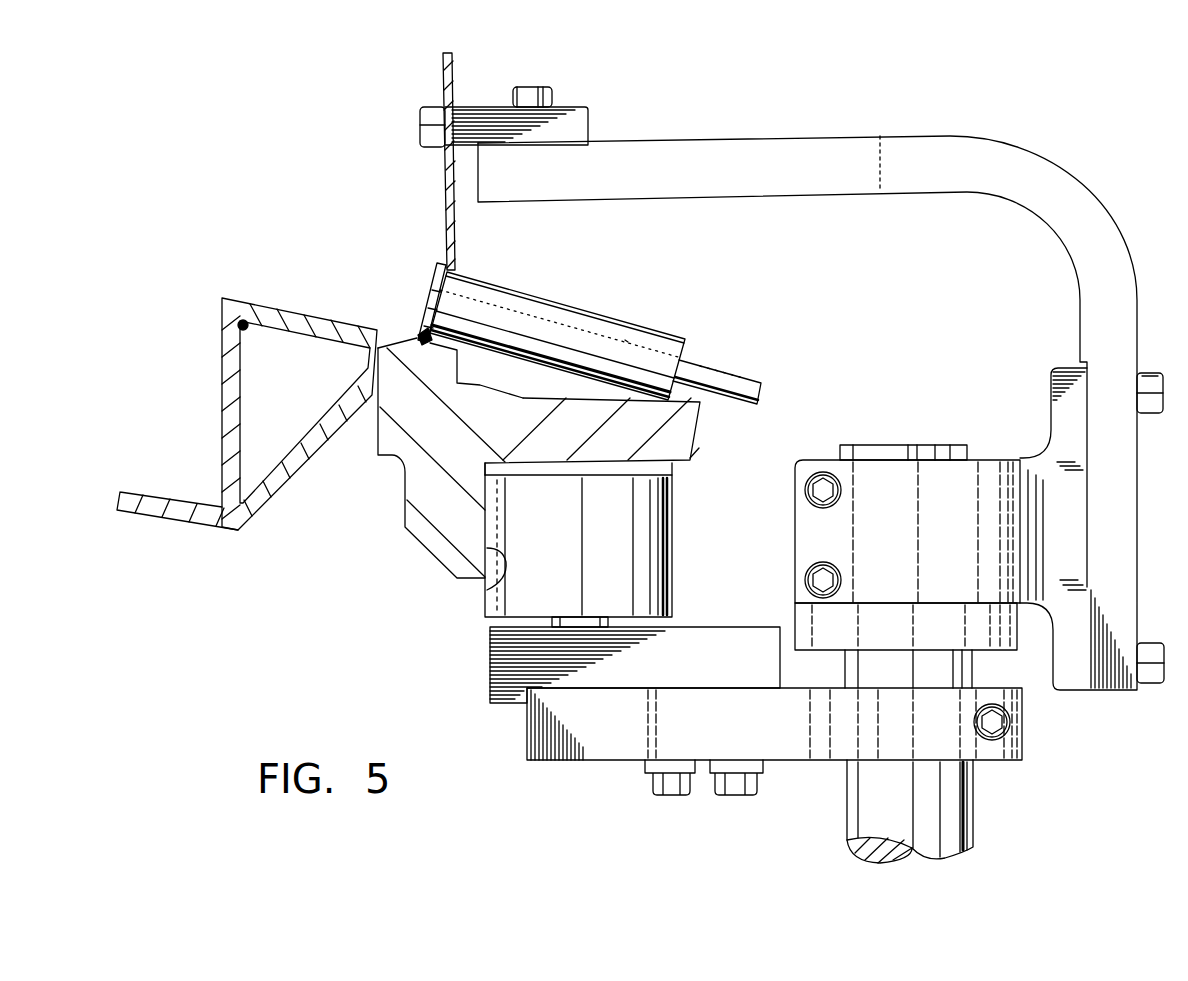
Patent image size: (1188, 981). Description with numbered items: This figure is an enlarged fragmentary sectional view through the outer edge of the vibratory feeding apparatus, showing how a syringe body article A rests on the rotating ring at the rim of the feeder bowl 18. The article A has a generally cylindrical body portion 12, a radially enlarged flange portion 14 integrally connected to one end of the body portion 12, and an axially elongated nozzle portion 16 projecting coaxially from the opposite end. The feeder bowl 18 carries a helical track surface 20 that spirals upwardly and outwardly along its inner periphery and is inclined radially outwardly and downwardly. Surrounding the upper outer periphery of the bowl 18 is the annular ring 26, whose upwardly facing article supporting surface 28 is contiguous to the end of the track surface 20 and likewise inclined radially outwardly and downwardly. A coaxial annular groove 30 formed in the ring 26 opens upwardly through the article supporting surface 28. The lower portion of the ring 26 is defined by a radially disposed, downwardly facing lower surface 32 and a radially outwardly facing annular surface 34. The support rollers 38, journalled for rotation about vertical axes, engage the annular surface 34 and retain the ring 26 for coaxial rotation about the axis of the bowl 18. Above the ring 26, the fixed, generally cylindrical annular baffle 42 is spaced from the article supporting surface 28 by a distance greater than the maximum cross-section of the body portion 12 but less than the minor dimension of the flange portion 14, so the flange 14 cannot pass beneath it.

The body portion 12 is at (660, 350).
The flange portion 14 is at (430, 288).
The nozzle portion 16 is at (730, 383).
The feeder bowl 18 is at (215, 293).
The helical track surface 20 is at (180, 497).
The annular ring 26 is at (688, 438).
The article supporting surface 28 is at (418, 336).
The annular groove 30 is at (485, 386).
The lower surface 32 is at (655, 478).
The annular surface 34 is at (487, 590).
The support rollers 38 is at (650, 575).
The annular baffle 42 is at (452, 80).
The article A is at (625, 340).